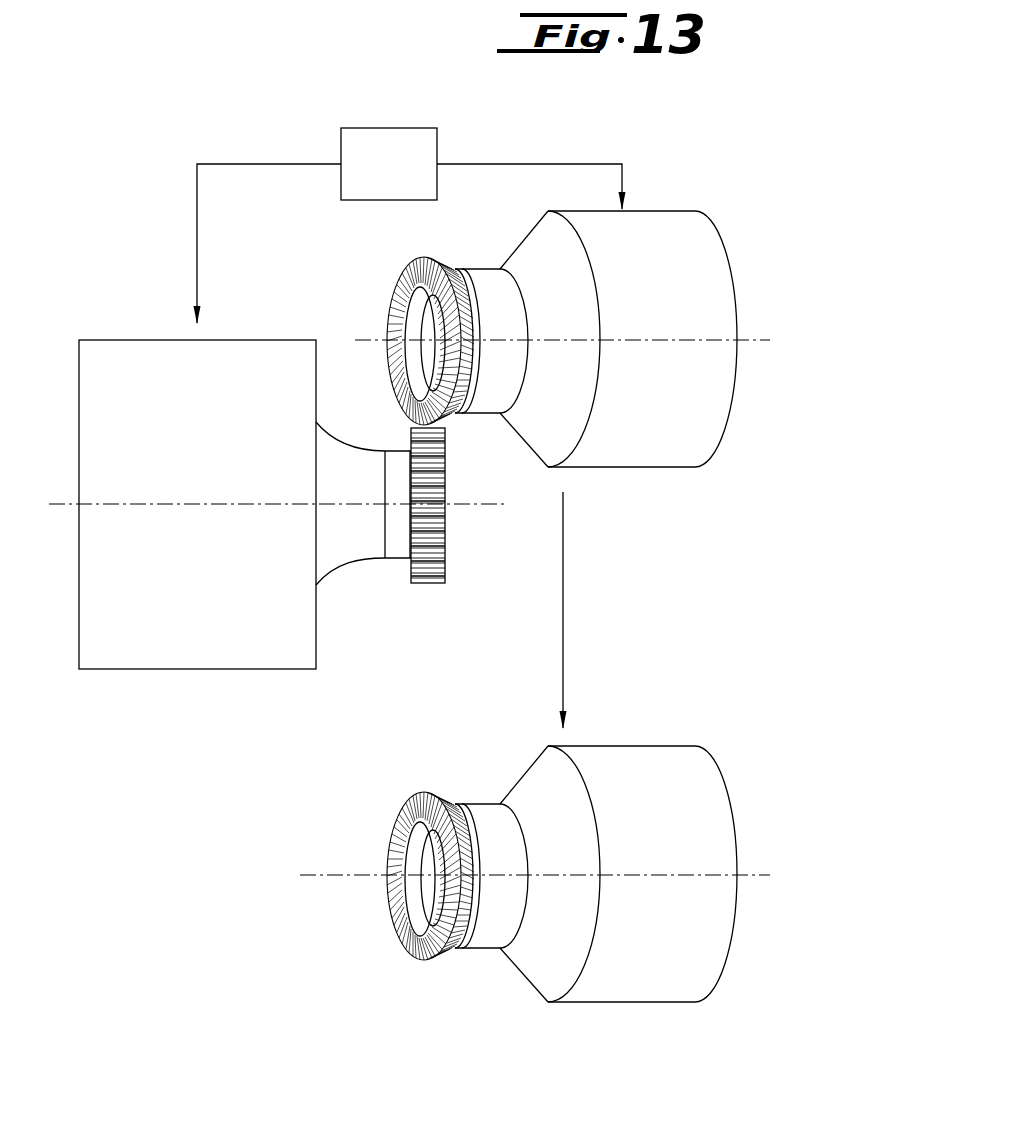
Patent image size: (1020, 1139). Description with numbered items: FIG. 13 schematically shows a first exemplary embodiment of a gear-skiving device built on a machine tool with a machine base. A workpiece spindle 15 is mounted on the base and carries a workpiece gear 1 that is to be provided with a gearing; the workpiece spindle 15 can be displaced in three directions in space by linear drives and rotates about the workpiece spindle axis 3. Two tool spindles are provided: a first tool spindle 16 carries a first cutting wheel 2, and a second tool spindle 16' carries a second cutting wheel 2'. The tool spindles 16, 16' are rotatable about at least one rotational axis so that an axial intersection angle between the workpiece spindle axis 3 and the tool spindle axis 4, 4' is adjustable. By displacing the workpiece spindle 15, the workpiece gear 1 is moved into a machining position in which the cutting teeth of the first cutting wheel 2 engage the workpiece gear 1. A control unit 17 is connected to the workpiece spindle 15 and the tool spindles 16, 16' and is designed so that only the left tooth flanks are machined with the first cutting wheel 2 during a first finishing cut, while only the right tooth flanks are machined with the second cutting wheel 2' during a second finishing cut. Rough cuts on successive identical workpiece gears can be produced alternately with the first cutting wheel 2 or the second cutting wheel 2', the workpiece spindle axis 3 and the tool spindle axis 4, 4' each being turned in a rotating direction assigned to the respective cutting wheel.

The workpiece gear 1 is at (428, 588).
The first cutting wheel 2 is at (408, 321).
The workpiece spindle axis 3 is at (470, 504).
The tool spindle axis 4 is at (553, 314).
The workpiece spindle 15 is at (195, 635).
The tool spindle 16 is at (618, 390).
The second tool spindle 16' is at (618, 825).
The control unit 17 is at (372, 180).
The second cutting wheel 2' is at (443, 940).
The tool spindle axis 4' is at (535, 914).